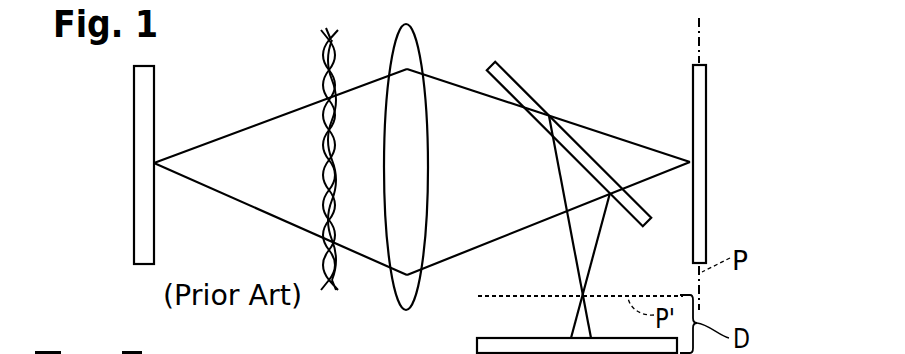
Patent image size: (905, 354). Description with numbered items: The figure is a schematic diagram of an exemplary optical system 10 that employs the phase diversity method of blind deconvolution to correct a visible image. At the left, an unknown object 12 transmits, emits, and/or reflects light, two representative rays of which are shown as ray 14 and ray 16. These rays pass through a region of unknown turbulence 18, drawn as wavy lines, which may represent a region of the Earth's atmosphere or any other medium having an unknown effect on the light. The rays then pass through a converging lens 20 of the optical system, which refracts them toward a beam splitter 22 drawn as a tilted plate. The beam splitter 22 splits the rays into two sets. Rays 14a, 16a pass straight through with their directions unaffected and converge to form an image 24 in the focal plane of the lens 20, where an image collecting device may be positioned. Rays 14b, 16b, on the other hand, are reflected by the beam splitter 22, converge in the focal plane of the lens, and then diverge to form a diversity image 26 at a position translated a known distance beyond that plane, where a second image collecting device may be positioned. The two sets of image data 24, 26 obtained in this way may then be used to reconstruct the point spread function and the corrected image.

The optical system 10 is at (748, 45).
The unknown object 12 is at (144, 128).
The ray 14 is at (258, 124).
The ray 16 is at (258, 209).
The region of unknown turbulence 18 is at (322, 72).
The converging lens 20 is at (418, 180).
The beam splitter 22 is at (522, 96).
The ray 14a is at (652, 131).
The ray 16a is at (688, 210).
The ray 14b is at (570, 234).
The ray 16b is at (601, 234).
The image 24 is at (702, 180).
The diversity image 26 is at (535, 345).